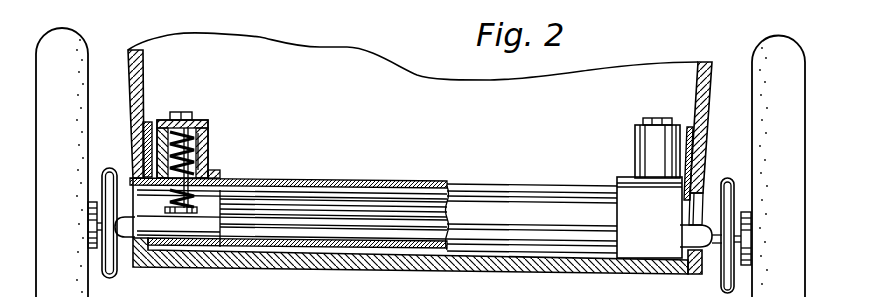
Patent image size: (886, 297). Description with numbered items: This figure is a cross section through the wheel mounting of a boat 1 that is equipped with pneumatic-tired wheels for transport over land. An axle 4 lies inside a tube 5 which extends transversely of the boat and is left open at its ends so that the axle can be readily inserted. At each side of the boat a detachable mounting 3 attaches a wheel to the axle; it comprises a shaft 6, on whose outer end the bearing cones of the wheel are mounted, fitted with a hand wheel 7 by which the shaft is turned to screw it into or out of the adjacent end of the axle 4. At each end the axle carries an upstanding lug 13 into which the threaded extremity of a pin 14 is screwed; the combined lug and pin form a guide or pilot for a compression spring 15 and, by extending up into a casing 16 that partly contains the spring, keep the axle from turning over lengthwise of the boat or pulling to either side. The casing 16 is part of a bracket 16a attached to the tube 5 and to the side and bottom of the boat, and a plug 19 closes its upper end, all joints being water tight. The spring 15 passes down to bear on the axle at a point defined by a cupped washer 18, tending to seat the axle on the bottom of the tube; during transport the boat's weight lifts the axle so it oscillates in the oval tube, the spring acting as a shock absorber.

The boat 1 is at (146, 112).
The detachable mounting 3 is at (111, 209).
The axle 4 is at (300, 230).
The tube 5 is at (410, 187).
The shaft 6 is at (84, 248).
The hand wheel 7 is at (726, 282).
The upstanding lug 13 is at (223, 178).
The pin 14 is at (210, 160).
The compression spring 15 is at (207, 142).
The casing 16 is at (205, 133).
The bracket 16a is at (183, 113).
The cupped washer 18 is at (245, 182).
The plug 19 is at (205, 120).